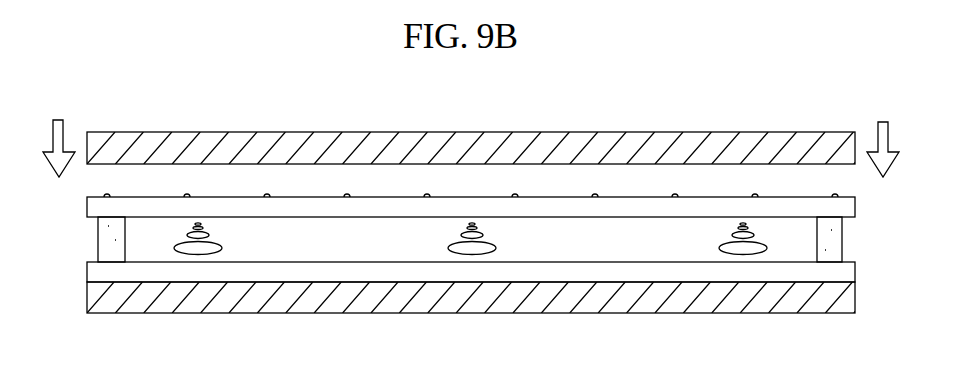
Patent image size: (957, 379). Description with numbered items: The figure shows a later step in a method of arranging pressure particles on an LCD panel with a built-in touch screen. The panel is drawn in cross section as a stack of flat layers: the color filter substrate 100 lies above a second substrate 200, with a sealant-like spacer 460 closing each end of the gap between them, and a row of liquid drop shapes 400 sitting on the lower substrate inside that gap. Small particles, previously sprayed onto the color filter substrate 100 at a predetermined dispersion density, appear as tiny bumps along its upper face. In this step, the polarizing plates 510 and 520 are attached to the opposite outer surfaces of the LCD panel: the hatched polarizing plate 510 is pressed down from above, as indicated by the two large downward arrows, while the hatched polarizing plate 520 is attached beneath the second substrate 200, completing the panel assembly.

The color filter substrate 100 is at (663, 212).
The second substrate 200 is at (597, 272).
The liquid crystal drops 400 is at (748, 248).
The sealant 460 is at (108, 237).
The polarizing plate 510 is at (818, 142).
The polarizing plate 520 is at (817, 288).